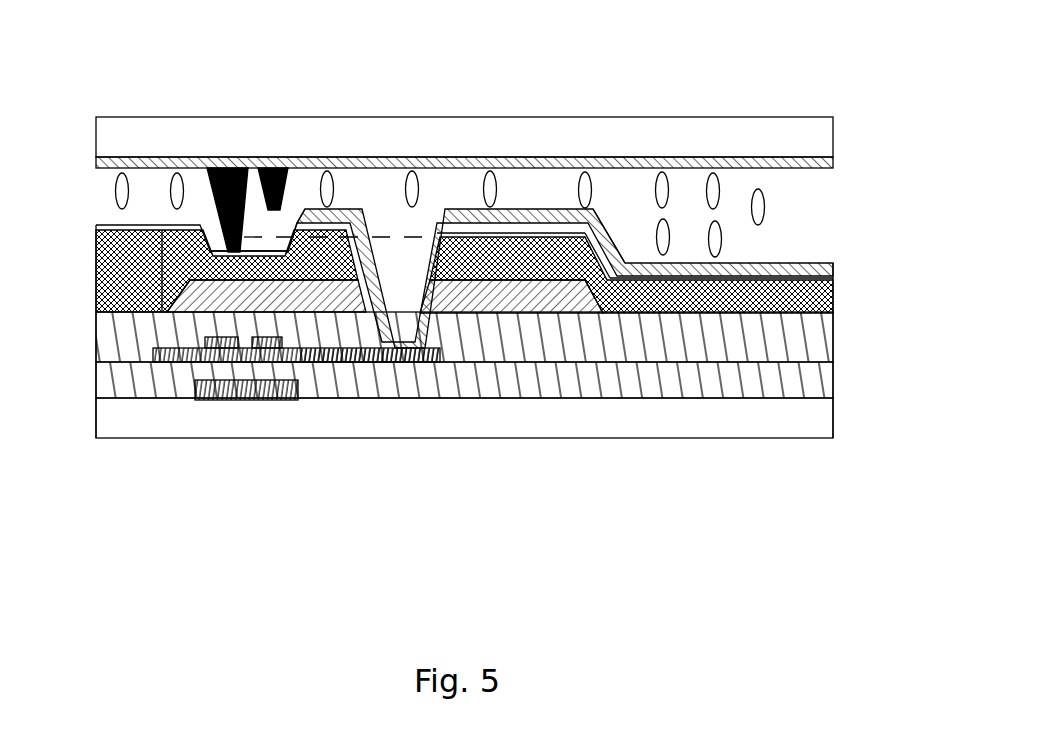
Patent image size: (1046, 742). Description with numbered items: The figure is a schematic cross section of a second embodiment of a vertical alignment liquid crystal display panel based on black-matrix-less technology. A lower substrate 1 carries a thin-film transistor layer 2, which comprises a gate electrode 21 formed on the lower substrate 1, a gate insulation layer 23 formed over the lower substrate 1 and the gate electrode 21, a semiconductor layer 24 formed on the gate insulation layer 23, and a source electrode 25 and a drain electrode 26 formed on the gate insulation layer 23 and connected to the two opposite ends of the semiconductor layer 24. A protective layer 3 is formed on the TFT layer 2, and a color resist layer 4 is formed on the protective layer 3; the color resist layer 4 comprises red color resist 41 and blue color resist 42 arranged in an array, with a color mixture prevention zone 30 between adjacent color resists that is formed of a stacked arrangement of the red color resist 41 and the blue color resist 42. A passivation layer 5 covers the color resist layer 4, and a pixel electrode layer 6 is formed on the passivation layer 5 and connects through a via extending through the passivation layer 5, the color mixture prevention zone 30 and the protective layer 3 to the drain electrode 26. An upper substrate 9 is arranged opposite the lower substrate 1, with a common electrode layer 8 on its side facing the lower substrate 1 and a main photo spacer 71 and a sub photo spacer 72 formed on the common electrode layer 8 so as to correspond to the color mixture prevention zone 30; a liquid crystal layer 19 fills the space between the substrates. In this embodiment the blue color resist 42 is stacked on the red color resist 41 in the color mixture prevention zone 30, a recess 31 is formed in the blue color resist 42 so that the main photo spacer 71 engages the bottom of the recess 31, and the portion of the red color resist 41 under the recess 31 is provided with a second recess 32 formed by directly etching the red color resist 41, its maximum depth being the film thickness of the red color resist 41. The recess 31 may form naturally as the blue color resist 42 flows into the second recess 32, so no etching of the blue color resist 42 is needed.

The lower substrate 1 is at (820, 411).
The thin-film transistor layer 2 is at (286, 466).
The protective layer 3 is at (800, 346).
The color resist layer 4 is at (483, 372).
The passivation layer 5 is at (105, 228).
The pixel electrode layer 6 is at (813, 269).
The common electrode layer 8 is at (833, 162).
The upper substrate 9 is at (787, 138).
The liquid crystal layer 19 is at (712, 198).
The gate electrode 21 is at (246, 439).
The gate insulation layer 23 is at (430, 363).
The semiconductor layer 24 is at (248, 353).
The source electrode 25 is at (187, 353).
The drain electrode 26 is at (337, 363).
The color mixture prevention zone 30 is at (613, 278).
The recess 31 is at (253, 247).
The second recess 32 is at (328, 235).
The red color resist 41 is at (523, 281).
The blue color resist 42 is at (833, 289).
The main photo spacer 71 is at (223, 168).
The sub photo spacer 72 is at (272, 168).